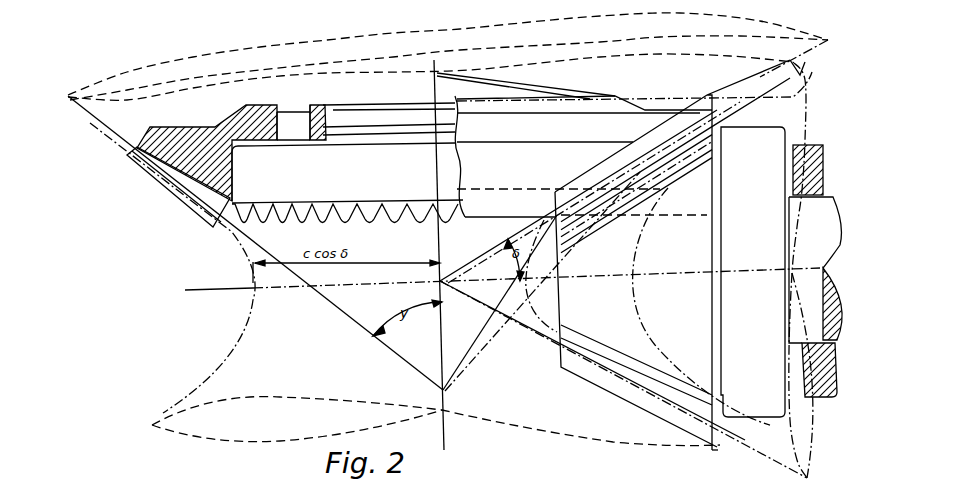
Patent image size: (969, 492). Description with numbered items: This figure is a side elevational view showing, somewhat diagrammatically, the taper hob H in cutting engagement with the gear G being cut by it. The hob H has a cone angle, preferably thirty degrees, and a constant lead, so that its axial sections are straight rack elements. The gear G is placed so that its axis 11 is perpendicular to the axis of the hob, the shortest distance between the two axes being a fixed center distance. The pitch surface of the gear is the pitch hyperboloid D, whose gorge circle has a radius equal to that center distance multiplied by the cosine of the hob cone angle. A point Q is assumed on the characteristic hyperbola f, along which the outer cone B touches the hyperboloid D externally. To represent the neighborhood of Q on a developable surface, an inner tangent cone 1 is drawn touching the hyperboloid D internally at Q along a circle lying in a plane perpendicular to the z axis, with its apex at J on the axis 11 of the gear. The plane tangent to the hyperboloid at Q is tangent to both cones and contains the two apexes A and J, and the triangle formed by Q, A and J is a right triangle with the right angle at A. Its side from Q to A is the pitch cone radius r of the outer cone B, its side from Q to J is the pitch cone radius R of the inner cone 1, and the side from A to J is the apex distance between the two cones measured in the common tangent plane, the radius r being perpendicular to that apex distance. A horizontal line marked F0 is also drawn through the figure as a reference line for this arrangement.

The inner tangent cone 1 is at (585, 17).
The axis of the gear 11 is at (438, 82).
The Z axis z is at (441, 252).
The work gear axis F0 is at (760, 262).
The gear G is at (205, 209).
The point on the characteristic hyperbola Q is at (638, 170).
The apex of the outer cone A is at (442, 279).
The apex of the inner cone J is at (444, 390).
The pitch cone radius of the inner cone R is at (515, 298).
The pitch cone radius of the outer cone r is at (541, 222).
The characteristic hyperbola f is at (565, 235).
The pitch hyperboloid D is at (230, 358).
The taper hob H is at (712, 448).
The outer cone B is at (822, 424).